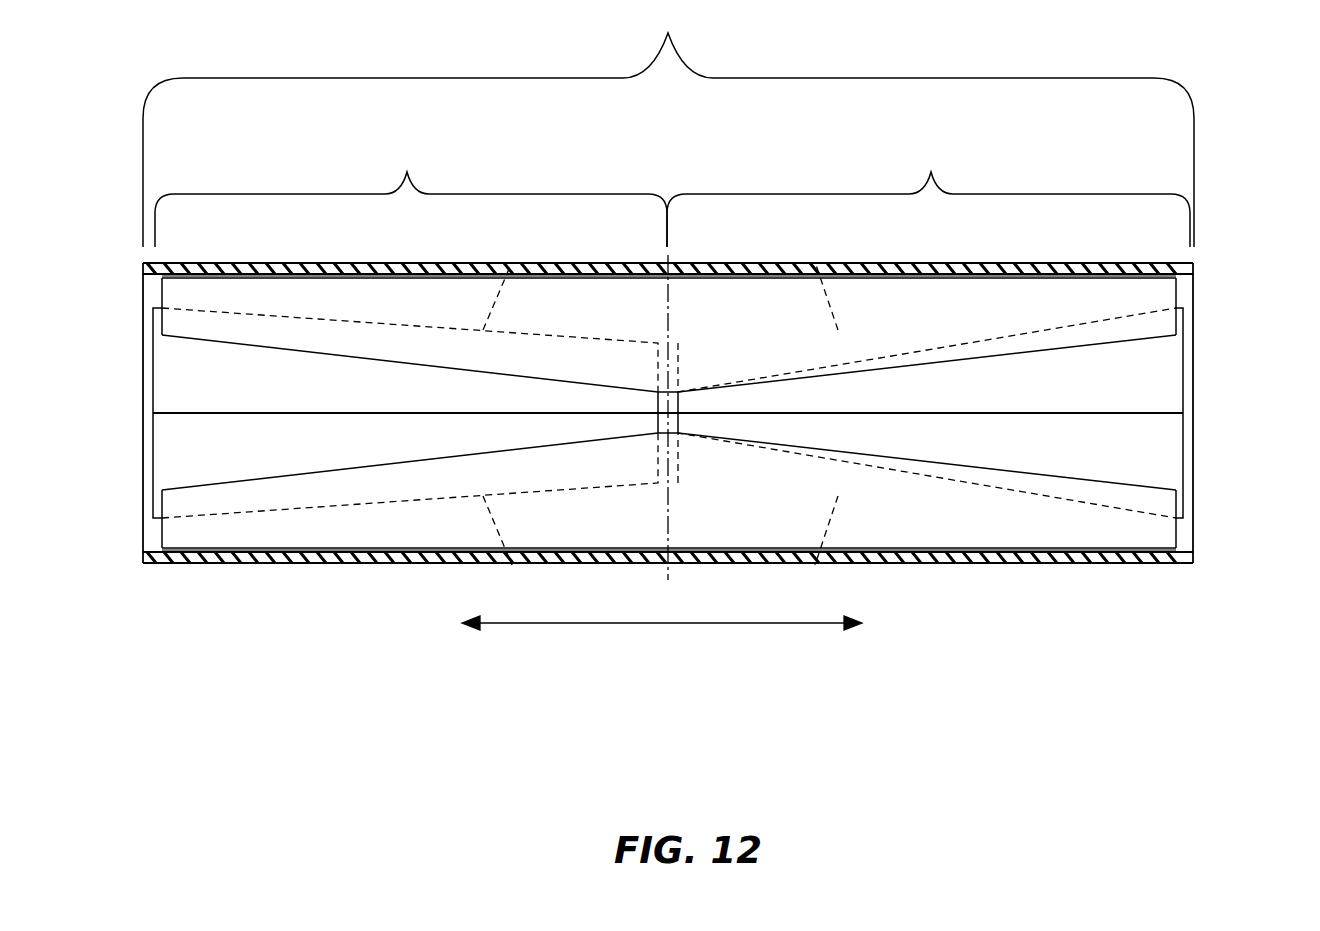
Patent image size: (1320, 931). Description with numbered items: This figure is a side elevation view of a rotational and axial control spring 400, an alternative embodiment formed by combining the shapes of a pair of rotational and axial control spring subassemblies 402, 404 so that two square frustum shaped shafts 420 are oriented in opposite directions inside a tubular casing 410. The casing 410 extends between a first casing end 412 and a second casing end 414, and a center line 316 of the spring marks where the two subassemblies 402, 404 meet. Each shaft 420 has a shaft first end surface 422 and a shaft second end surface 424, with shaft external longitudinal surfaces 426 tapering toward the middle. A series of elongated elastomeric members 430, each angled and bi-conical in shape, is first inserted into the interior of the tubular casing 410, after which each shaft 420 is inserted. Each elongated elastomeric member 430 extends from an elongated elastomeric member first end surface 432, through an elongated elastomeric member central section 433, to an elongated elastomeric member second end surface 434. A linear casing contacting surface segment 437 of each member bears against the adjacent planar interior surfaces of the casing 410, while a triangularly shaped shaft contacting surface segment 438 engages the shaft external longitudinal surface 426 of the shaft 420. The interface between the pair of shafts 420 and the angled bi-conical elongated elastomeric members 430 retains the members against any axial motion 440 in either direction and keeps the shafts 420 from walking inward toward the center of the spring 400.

The rotational and axial control spring 400 is at (668, 126).
The first module portion 402 is at (411, 196).
The second module portion 404 is at (928, 196).
The tubular casing 410 is at (390, 565).
The first casing end 412 is at (143, 455).
The second casing end 414 is at (1193, 450).
The shaft 420 is at (190, 428).
The shaft first end surface 422 is at (153, 370).
The shaft second end surface 424 is at (1183, 368).
The shaft external longitudinal surface 426 is at (512, 262).
The elongated elastomeric member 430 is at (288, 300).
The elongated elastomeric member first end surface 432 is at (162, 290).
The elongated elastomeric member central section 433 is at (666, 392).
The elongated elastomeric member second end surface 434 is at (1176, 294).
The linear casing contacting surface segment 437 is at (345, 357).
The triangularly shaped shaft contacting surface segment 438 is at (347, 263).
The axial motion 440 is at (662, 625).
The central axis 316 is at (680, 282).